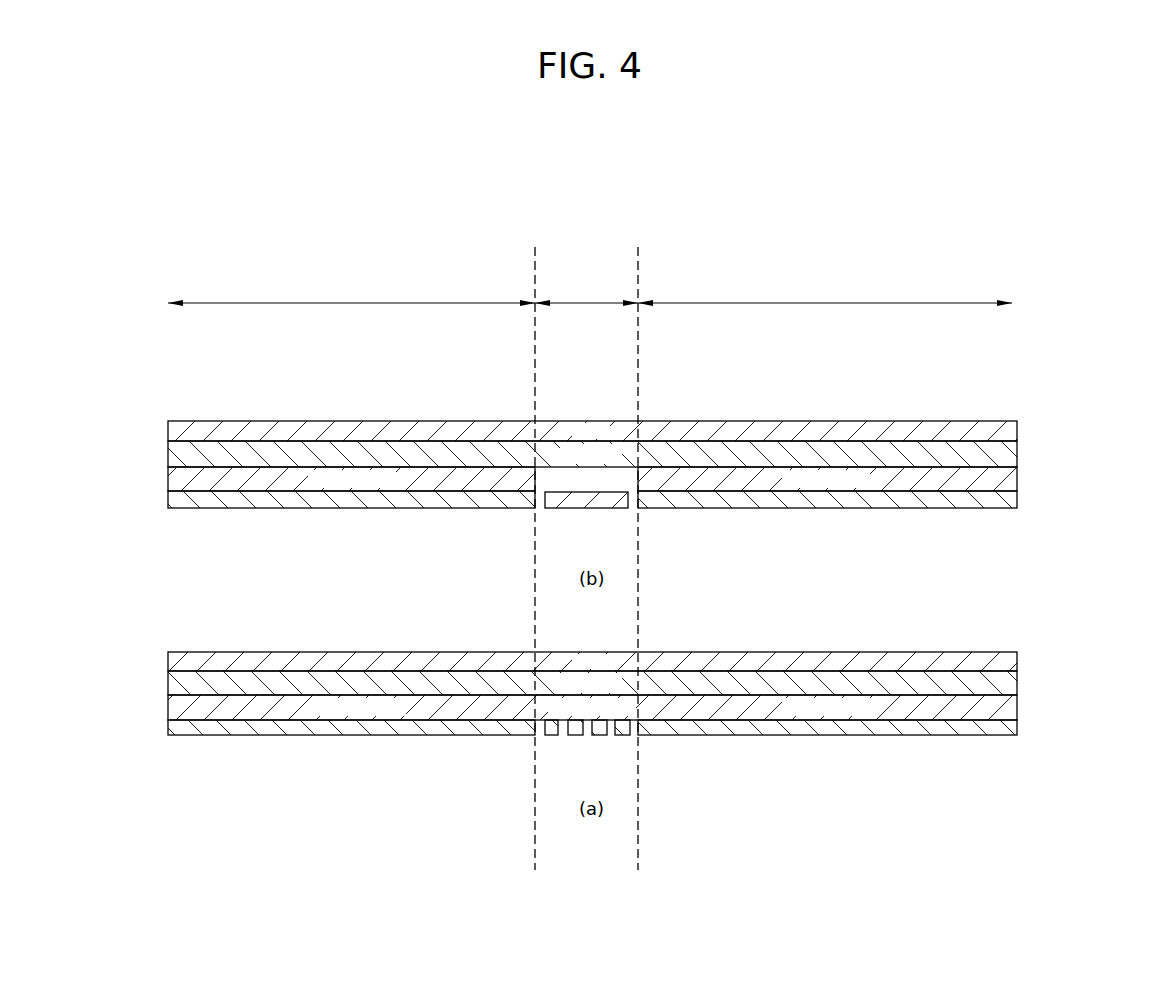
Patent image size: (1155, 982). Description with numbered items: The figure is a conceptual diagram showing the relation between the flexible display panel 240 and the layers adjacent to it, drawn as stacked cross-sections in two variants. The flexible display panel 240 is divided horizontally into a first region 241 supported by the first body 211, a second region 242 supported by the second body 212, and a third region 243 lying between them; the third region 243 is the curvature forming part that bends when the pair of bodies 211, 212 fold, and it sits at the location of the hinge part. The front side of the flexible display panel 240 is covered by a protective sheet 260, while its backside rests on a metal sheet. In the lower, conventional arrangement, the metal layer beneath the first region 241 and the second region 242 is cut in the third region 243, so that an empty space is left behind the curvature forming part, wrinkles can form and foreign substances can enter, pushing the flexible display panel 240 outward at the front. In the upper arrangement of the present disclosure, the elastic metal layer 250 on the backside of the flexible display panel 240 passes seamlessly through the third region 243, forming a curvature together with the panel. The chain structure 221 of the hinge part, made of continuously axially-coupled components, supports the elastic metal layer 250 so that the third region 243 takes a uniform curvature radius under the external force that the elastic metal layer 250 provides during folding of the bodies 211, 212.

The first region 241 is at (351, 289).
The second region 242 is at (825, 289).
The third region 243 is at (586, 289).
The protective sheet 260 is at (1014, 427).
The flexible display panel 240 is at (1014, 452).
The elastic metal layer 250 is at (1014, 478).
The second body 212 is at (1014, 503).
The first body 211 is at (168, 508).
The chain structure 221 is at (565, 508).